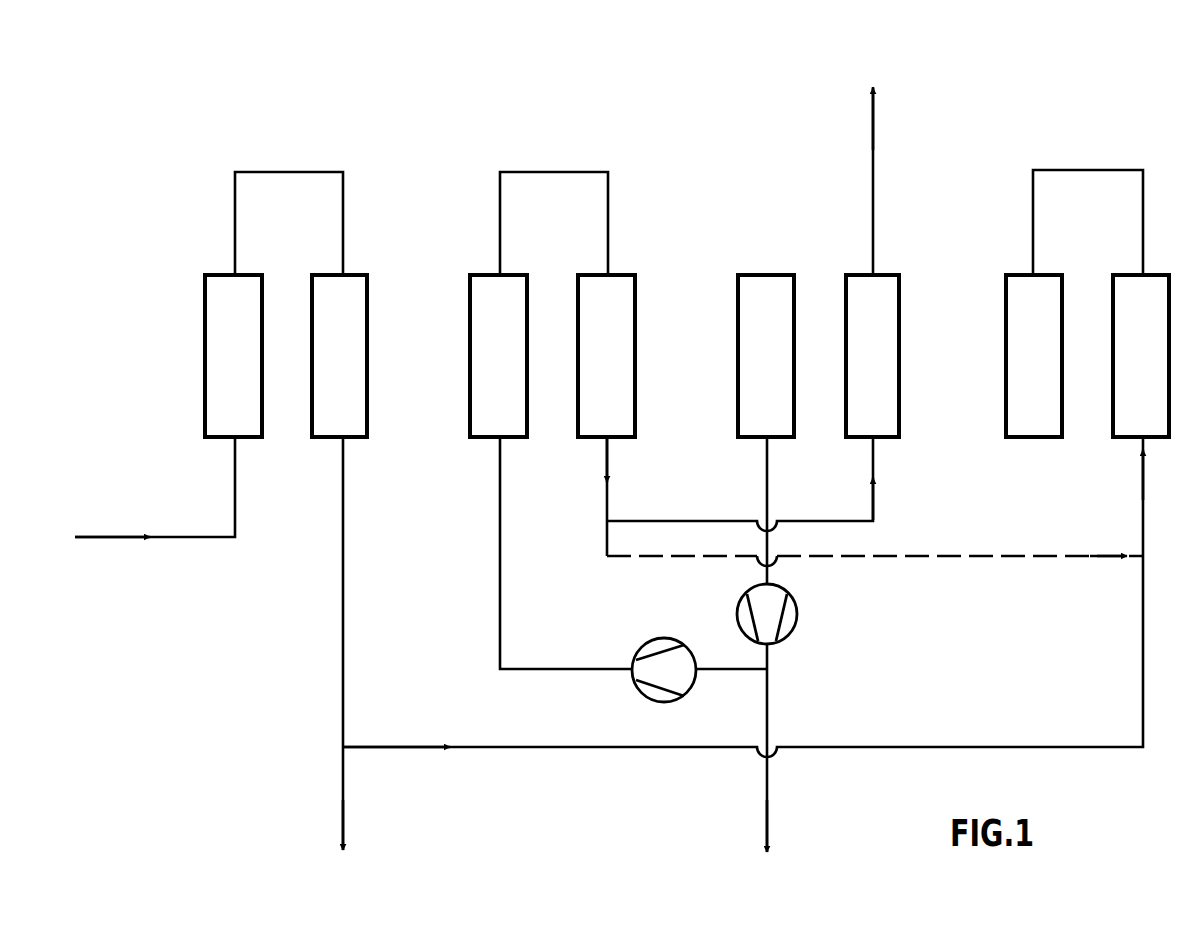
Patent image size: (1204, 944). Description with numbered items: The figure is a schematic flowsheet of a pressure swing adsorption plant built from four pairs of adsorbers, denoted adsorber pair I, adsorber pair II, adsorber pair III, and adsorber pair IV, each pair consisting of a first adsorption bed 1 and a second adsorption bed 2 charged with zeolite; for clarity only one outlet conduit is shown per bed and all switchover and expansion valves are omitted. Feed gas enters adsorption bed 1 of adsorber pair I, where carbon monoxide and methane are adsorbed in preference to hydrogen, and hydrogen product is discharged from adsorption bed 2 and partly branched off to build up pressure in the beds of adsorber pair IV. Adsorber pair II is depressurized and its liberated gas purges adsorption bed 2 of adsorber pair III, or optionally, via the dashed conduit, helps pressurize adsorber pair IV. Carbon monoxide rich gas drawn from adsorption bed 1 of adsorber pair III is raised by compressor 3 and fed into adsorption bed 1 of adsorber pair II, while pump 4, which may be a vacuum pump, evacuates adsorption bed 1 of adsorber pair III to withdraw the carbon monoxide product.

The first adsorption bed 1 is at (633, 356).
The second adsorption bed 2 is at (740, 356).
The compressor 3 is at (664, 638).
The pump 4 is at (800, 613).
The adsorber pair I is at (283, 356).
The adsorber pair II is at (550, 356).
The adsorber pair III is at (819, 356).
The adsorber pair IV is at (1089, 356).